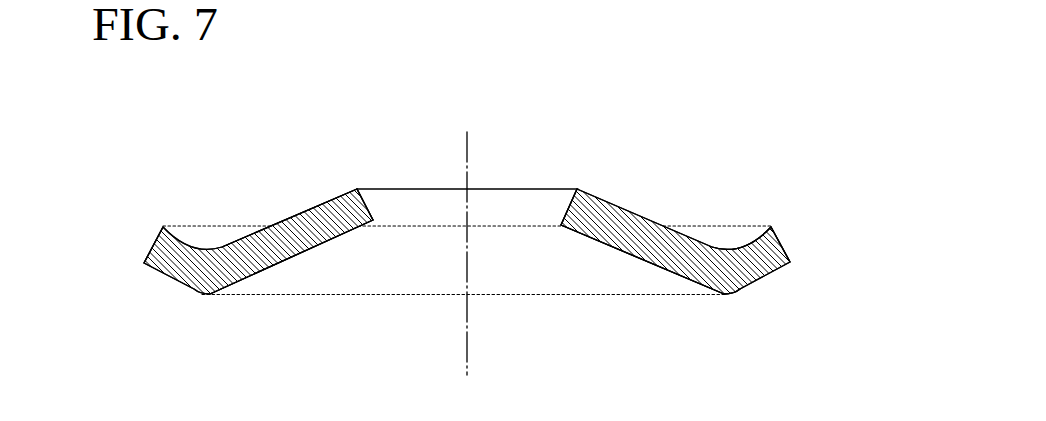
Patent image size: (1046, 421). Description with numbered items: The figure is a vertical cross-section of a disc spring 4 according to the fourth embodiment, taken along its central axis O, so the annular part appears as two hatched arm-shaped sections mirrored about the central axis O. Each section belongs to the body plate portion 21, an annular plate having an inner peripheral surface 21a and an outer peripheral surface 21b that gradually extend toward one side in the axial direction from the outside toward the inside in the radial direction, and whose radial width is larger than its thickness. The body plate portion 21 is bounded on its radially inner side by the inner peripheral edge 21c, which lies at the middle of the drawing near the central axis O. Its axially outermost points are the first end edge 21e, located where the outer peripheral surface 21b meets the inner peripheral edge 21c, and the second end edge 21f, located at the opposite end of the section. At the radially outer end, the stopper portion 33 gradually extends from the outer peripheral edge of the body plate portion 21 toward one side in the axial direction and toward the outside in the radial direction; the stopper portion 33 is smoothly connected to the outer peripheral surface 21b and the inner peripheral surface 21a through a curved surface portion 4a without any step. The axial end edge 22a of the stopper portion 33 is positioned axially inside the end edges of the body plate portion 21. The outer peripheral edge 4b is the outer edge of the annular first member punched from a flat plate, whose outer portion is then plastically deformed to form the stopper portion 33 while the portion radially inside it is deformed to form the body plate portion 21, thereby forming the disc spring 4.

The disc spring 4 is at (479, 217).
The curved surface portion 4a is at (725, 295).
The outer peripheral edge 4b is at (160, 237).
The body plate portion 21 is at (479, 240).
The inner peripheral surface 21a is at (322, 248).
The outer peripheral surface 21b is at (297, 213).
The inner peripheral edge 21c is at (373, 207).
The first end edge 21e is at (579, 189).
The second end edge 21f is at (715, 295).
The axial end edge of stopper portion 22a is at (770, 226).
The stopper portion 33 is at (786, 232).
The central axis O is at (470, 157).